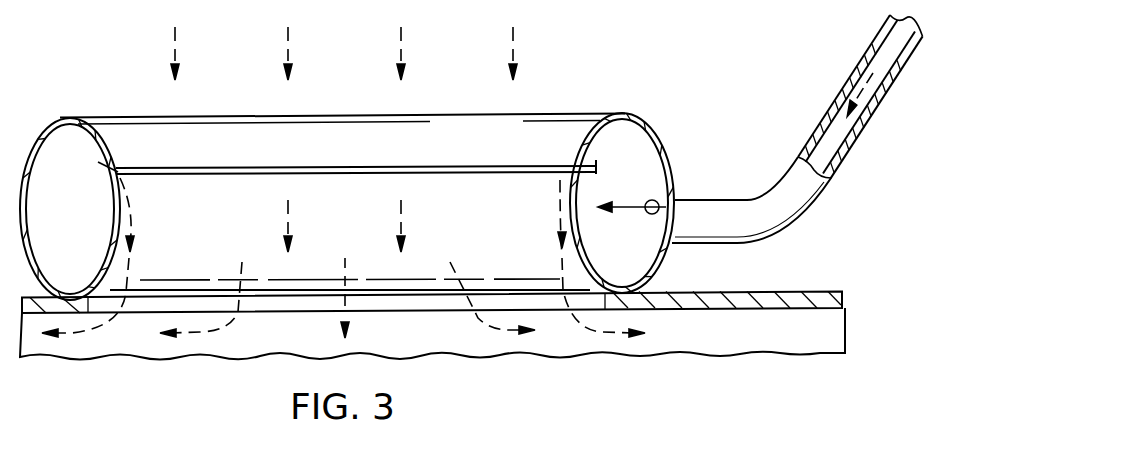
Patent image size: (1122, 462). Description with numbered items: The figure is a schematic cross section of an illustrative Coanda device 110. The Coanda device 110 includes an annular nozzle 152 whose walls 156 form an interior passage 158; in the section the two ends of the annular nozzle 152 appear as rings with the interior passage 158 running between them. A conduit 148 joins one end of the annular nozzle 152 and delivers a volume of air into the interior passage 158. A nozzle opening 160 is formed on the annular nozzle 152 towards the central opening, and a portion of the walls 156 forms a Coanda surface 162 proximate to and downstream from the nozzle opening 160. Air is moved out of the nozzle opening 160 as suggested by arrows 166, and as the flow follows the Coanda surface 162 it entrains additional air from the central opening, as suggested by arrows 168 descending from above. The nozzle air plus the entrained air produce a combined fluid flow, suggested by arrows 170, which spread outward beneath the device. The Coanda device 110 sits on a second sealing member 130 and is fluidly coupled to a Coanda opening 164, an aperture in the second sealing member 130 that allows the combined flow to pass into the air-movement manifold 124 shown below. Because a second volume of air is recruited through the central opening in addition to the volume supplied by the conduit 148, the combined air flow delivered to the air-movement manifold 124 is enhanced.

The Coanda device 110 is at (548, 116).
The air-movement manifold 124 is at (843, 322).
The second sealing member 130 is at (44, 293).
The conduit 148 is at (852, 70).
The annular nozzle 152 is at (245, 116).
The walls 156 is at (48, 120).
The interior passage 158 is at (636, 148).
The nozzle opening 160 is at (347, 173).
The Coanda surface 162 is at (458, 192).
The Coanda opening 164 is at (90, 300).
The arrows 166 is at (130, 208).
The arrows 168 is at (400, 37).
The arrows 170 is at (215, 318).